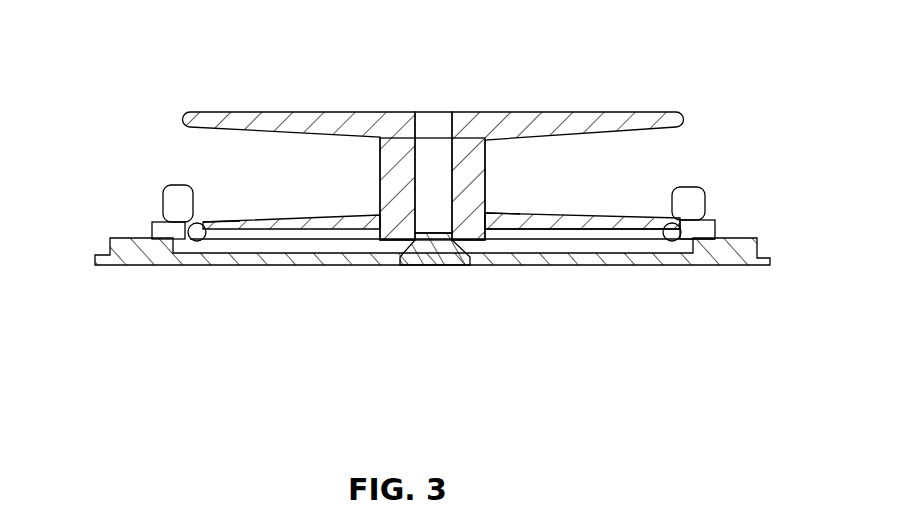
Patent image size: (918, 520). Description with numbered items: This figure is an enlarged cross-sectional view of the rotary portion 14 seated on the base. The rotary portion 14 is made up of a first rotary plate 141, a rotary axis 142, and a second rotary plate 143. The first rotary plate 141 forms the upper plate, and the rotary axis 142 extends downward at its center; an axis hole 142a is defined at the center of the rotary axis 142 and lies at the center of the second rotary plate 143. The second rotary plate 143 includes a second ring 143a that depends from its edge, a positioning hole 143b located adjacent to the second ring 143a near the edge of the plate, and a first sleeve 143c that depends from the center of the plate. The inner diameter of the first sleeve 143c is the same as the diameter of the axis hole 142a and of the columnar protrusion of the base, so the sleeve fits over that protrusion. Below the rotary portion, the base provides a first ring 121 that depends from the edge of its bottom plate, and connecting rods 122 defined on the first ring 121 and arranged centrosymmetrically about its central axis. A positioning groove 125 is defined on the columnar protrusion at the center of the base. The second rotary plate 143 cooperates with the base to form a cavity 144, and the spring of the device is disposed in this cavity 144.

The rotary portion 14 is at (445, 137).
The first rotary plate 141 is at (613, 112).
The rotary axis 142 is at (582, 136).
The axis hole 142a is at (432, 142).
The second rotary plate 143 is at (402, 195).
The second ring 143a is at (182, 225).
The positioning hole 143b is at (224, 222).
The first sleeve 143c is at (487, 215).
The connecting rod 122 is at (683, 206).
The first ring 121 is at (715, 239).
The cavity 144 is at (588, 248).
The positioning groove 125 is at (432, 242).